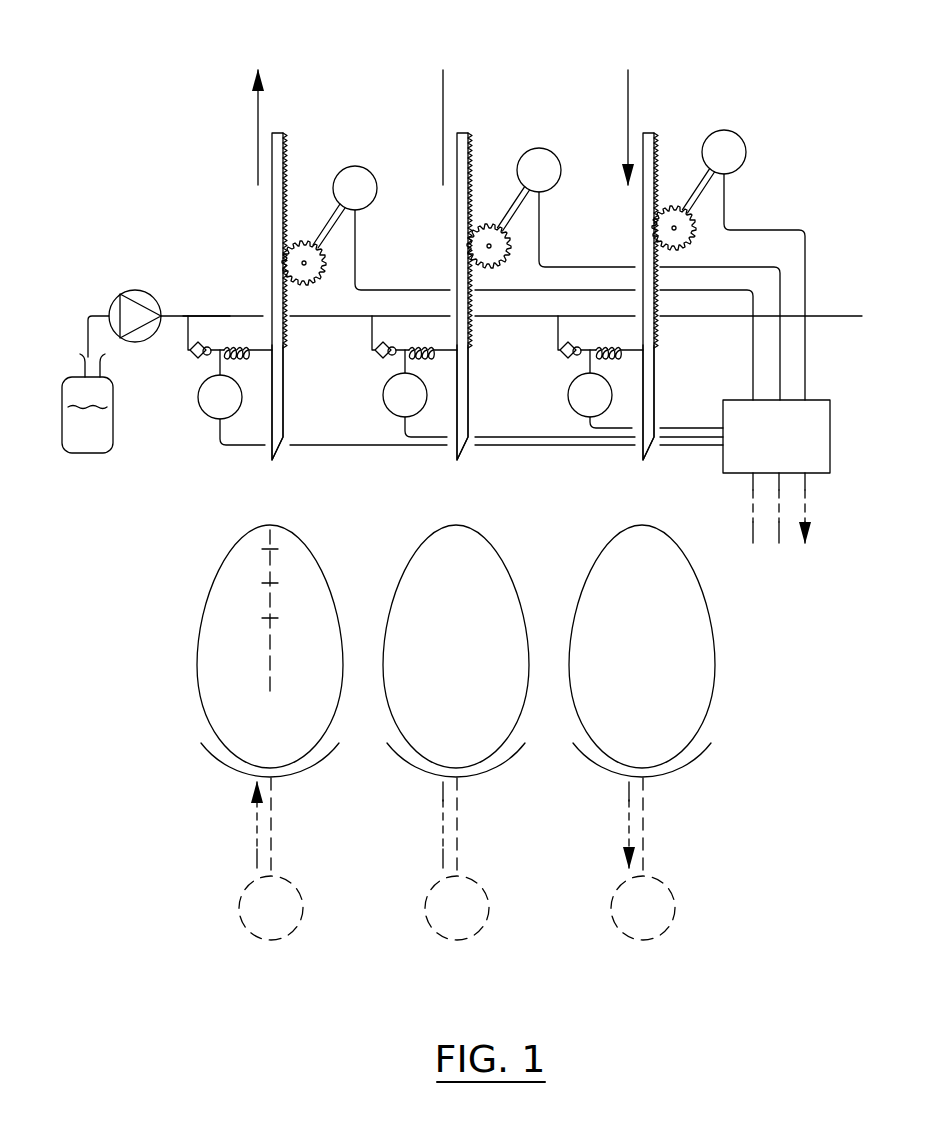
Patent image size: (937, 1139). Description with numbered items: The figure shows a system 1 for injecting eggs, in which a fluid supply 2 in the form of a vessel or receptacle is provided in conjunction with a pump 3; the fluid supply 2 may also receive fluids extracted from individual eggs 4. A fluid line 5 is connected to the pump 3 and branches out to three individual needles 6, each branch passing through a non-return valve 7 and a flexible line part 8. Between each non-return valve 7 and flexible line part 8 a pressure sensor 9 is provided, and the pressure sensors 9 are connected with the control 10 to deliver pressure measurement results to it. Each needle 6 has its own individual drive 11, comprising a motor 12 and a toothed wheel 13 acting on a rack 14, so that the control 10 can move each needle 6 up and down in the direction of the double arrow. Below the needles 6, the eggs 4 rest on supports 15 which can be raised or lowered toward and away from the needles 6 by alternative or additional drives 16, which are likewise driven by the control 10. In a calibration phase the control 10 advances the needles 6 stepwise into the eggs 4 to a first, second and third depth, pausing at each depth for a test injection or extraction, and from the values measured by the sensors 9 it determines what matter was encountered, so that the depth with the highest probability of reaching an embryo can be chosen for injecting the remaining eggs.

The system 1 is at (153, 170).
The fluid supply 2 is at (87, 442).
The pump 3 is at (140, 292).
The egg 4 is at (203, 660).
The fluid line 5 is at (205, 315).
The needle 6 is at (272, 412).
The non-return valve 7 is at (195, 359).
The flexible line part 8 is at (240, 341).
The pressure sensor 9 is at (205, 405).
The control 10 is at (820, 437).
The individual drive 11 is at (323, 140).
The motor 12 is at (370, 172).
The toothed wheel 13 is at (306, 285).
The rack 14 is at (271, 228).
The support 15 is at (215, 757).
The drive 16 is at (225, 868).